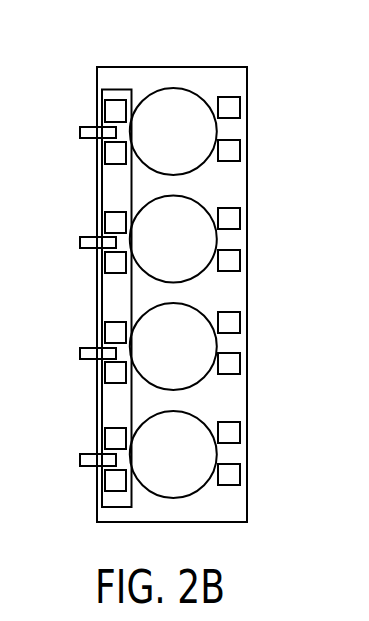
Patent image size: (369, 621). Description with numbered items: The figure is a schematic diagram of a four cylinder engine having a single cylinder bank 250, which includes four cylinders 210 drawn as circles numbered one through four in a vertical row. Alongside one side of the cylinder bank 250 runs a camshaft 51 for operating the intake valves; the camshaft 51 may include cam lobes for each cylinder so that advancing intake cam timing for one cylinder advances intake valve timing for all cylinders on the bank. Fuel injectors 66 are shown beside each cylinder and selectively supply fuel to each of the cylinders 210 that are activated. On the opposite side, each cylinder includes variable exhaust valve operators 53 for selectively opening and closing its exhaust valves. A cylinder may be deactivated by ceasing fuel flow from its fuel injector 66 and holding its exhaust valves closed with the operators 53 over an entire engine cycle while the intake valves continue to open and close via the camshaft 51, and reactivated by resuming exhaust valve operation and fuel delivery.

The cylinder bank 250 is at (236, 63).
The camshaft 51 is at (112, 95).
The cylinders 210 is at (247, 132).
The variable exhaust valve operators 53 is at (231, 108).
The fuel injectors 66 is at (83, 131).